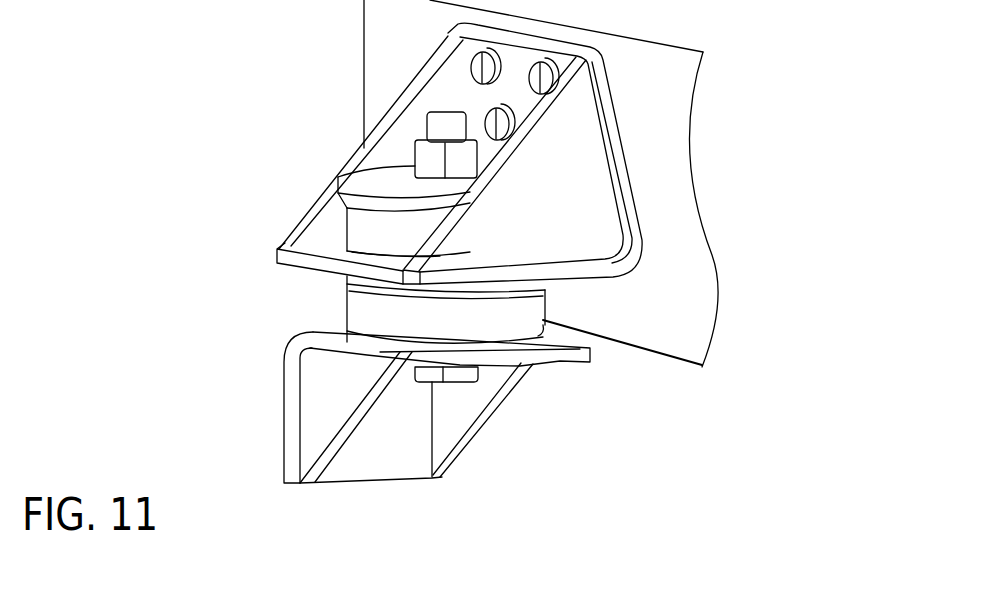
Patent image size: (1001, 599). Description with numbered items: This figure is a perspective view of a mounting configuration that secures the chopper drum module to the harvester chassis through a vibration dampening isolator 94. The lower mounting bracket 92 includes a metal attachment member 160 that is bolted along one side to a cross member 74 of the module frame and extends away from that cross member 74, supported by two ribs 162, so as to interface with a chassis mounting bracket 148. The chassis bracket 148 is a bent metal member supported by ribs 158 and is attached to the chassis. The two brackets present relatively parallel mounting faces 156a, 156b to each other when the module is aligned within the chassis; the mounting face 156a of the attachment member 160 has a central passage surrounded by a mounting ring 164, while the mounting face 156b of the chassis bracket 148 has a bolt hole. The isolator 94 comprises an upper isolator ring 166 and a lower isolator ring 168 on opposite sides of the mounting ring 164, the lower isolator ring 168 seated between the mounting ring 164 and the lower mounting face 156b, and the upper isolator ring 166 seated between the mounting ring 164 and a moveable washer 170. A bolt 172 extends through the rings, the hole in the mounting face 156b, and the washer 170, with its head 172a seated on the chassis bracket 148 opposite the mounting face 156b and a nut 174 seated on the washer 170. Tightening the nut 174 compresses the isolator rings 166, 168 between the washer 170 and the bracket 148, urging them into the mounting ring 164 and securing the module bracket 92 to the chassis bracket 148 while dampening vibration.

The lower mounting bracket 92 is at (620, 93).
The cross member 74 is at (652, 147).
The attachment member 160 is at (652, 257).
The rib 162 is at (428, 62).
The bolt 172 is at (440, 127).
The nut 174 is at (430, 153).
The moveable washer 170 is at (380, 177).
The isolator 94 is at (347, 230).
The upper isolator ring 166 is at (365, 213).
The mounting ring 164 is at (347, 274).
The mounting face 156a is at (563, 290).
The mounting face 156b is at (328, 325).
The lower isolator ring 168 is at (360, 318).
The chassis mounting bracket 148 is at (283, 418).
The rib 158 is at (333, 450).
The bolt head 172a is at (465, 385).